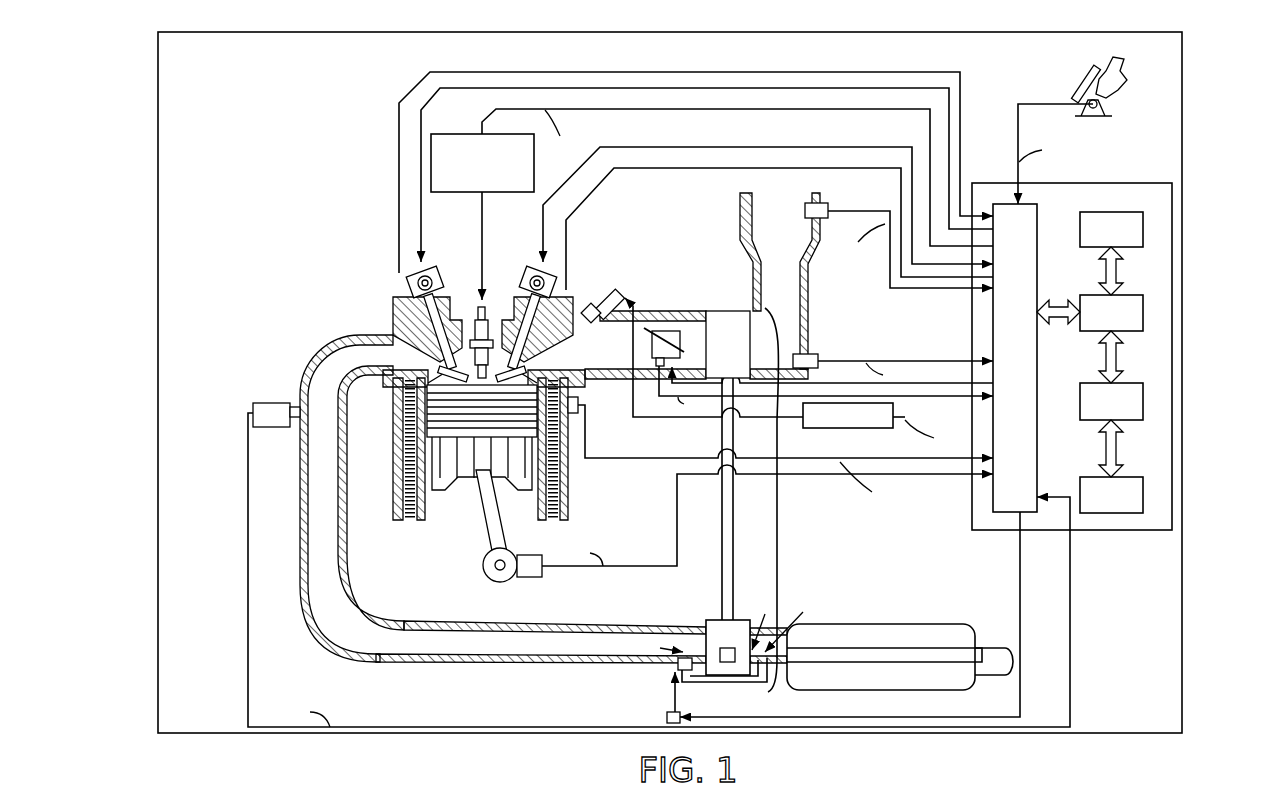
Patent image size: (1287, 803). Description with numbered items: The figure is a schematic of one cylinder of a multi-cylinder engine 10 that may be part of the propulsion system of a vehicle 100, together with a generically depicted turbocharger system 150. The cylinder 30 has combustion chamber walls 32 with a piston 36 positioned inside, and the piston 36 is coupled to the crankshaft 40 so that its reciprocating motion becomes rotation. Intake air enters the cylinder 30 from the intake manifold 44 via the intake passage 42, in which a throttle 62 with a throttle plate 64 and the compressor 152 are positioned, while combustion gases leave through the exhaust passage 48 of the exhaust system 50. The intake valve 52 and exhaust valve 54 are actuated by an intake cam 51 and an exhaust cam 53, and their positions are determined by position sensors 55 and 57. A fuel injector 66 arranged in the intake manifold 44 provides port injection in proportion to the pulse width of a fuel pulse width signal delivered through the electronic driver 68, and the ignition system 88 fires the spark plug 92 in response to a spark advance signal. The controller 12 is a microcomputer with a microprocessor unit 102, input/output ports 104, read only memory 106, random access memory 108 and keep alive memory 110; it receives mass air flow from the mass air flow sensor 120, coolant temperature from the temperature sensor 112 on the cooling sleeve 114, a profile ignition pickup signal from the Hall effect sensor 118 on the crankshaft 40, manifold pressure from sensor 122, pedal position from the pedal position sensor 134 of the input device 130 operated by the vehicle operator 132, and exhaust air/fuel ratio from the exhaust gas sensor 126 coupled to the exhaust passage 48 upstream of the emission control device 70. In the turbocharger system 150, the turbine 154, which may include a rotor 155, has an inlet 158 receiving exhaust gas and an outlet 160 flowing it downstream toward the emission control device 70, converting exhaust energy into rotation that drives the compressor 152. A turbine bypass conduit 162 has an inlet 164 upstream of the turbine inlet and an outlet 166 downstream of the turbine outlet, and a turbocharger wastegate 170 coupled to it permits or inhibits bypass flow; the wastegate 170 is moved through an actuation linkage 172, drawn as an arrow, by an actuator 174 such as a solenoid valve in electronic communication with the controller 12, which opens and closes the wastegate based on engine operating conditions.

The vehicle 100 is at (158, 46).
The engine 10 is at (338, 253).
The controller 12 is at (1111, 345).
The cylinder 30 is at (415, 462).
The combustion chamber walls 32 is at (430, 510).
The piston 36 is at (483, 470).
The crankshaft 40 is at (492, 584).
The intake passage 42 is at (771, 249).
The intake manifold 44 is at (600, 352).
The exhaust passage 48 is at (352, 361).
The exhaust system 50 is at (288, 352).
The intake cam 51 is at (530, 270).
The intake valve 52 is at (517, 365).
The exhaust cam 53 is at (431, 270).
The exhaust valve 54 is at (430, 342).
The position sensor 55 is at (548, 292).
The position sensor 57 is at (406, 292).
The throttle 62 is at (680, 338).
The throttle plate 64 is at (645, 321).
The fuel injector 66 is at (618, 300).
The electronic driver 68 is at (814, 428).
The emission control device 70 is at (940, 630).
The ignition system 88 is at (441, 134).
The spark plug 92 is at (485, 302).
The microprocessor unit 102 is at (1145, 306).
The input/output ports 104 is at (1040, 210).
The read only memory 106 is at (1145, 226).
The random access memory 108 is at (1145, 400).
The keep alive memory 110 is at (1145, 492).
The temperature sensor 112 is at (580, 409).
The cooling sleeve 114 is at (556, 482).
The Hall effect sensor 118 is at (532, 578).
The mass air flow sensor 120 is at (828, 205).
The manifold pressure sensor 122 is at (820, 368).
The exhaust gas sensor 126 is at (250, 404).
The input device 130 is at (1077, 85).
The vehicle operator 132 is at (1122, 72).
The pedal position sensor 134 is at (1112, 106).
The turbocharger system 150 is at (777, 472).
The compressor 152 is at (736, 312).
The turbine 154 is at (712, 622).
The rotor 155 is at (728, 648).
The inlet 158 is at (722, 545).
The outlet 160 is at (762, 620).
The turbine bypass conduit 162 is at (700, 683).
The inlet 164 is at (655, 646).
The outlet 166 is at (798, 622).
The turbocharger wastegate 170 is at (682, 666).
The actuation linkage 172 is at (675, 692).
The actuator 174 is at (667, 717).